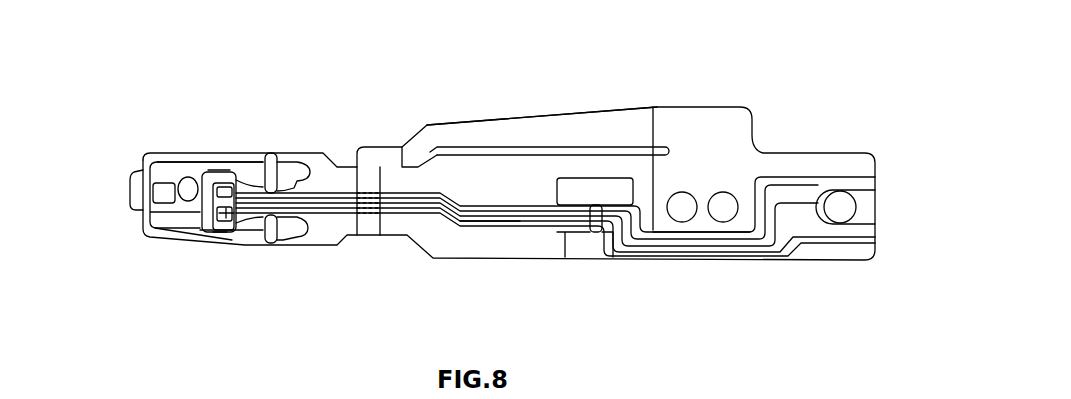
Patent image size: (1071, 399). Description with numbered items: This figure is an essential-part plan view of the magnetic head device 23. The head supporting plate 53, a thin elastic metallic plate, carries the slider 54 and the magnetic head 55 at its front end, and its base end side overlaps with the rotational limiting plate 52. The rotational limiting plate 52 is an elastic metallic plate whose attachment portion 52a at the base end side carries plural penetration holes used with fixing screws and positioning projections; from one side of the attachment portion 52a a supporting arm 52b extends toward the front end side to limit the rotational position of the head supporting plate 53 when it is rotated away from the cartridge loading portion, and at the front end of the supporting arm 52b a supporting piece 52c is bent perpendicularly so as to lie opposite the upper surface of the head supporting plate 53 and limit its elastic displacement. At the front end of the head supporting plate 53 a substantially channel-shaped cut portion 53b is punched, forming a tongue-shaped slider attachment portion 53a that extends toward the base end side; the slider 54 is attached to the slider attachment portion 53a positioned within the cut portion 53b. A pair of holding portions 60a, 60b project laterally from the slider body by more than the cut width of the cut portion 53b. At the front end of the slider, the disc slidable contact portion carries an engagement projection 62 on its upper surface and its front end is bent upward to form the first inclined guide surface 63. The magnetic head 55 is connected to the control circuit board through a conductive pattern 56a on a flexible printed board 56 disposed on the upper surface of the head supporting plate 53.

The magnetic head device 23 is at (768, 76).
The rotational limiting plate 52 is at (623, 122).
The attachment portion 52a is at (740, 147).
The supporting arm 52b is at (503, 122).
The supporting piece 52c is at (383, 141).
The head supporting plate 53 is at (321, 150).
The slider attachment portion 53a is at (178, 205).
The cut portion 53b is at (202, 160).
The slider 54 is at (206, 230).
The magnetic head 55 is at (225, 215).
The flexible printed board 56 is at (503, 222).
The conductive pattern 56a is at (473, 222).
The holding portion 60a is at (272, 150).
The holding portion 60b is at (274, 242).
The engagement projection 62 is at (187, 177).
The first inclined guide surface 63 is at (137, 210).